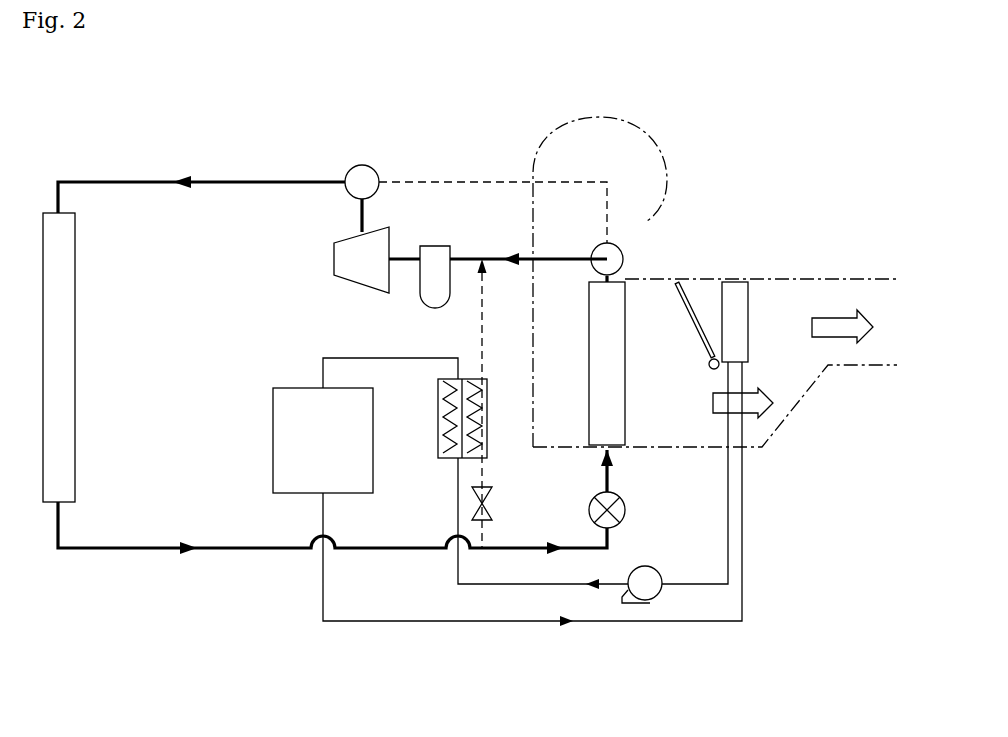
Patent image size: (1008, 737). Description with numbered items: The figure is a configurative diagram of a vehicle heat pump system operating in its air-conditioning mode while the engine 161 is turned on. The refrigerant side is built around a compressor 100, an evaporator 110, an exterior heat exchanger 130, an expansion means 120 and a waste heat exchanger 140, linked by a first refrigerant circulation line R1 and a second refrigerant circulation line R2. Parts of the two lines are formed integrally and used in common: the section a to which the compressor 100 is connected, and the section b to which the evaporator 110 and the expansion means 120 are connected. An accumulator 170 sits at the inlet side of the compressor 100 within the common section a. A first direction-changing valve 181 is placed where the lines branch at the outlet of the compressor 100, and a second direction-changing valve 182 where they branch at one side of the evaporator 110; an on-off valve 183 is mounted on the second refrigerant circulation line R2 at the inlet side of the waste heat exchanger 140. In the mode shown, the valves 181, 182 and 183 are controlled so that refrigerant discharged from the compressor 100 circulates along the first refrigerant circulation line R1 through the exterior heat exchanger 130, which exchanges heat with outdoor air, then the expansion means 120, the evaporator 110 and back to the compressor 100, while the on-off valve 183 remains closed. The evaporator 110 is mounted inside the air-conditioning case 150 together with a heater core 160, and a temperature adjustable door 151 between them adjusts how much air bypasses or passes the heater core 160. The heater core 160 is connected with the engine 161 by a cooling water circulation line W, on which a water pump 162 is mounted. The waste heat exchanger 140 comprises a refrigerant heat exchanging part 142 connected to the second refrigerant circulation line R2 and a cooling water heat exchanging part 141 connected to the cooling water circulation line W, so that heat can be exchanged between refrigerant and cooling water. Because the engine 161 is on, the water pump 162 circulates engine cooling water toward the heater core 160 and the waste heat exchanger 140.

The compressor 100 is at (334, 260).
The evaporator 110 is at (627, 312).
The expansion means 120 is at (625, 517).
The exterior heat exchanger 130 is at (53, 503).
The waste heat exchanger 140 is at (407, 543).
The cooling water heat exchanging part 141 is at (443, 458).
The refrigerant heat exchanging part 142 is at (468, 458).
The air-conditioning case 150 is at (806, 393).
The temperature adjustable door 151 is at (692, 320).
The heater core 160 is at (748, 320).
The engine 161 is at (273, 442).
The water pump 162 is at (652, 600).
The accumulator 170 is at (423, 307).
The first direction-changing valve 181 is at (362, 165).
The second direction-changing valve 182 is at (624, 257).
The on-off valve 183 is at (487, 510).
The first refrigerant circulation line R1 is at (216, 162).
The second refrigerant circulation line R2 is at (496, 300).
The cooling water circulation line W is at (531, 622).
The common section a is at (480, 257).
The common section b is at (605, 545).